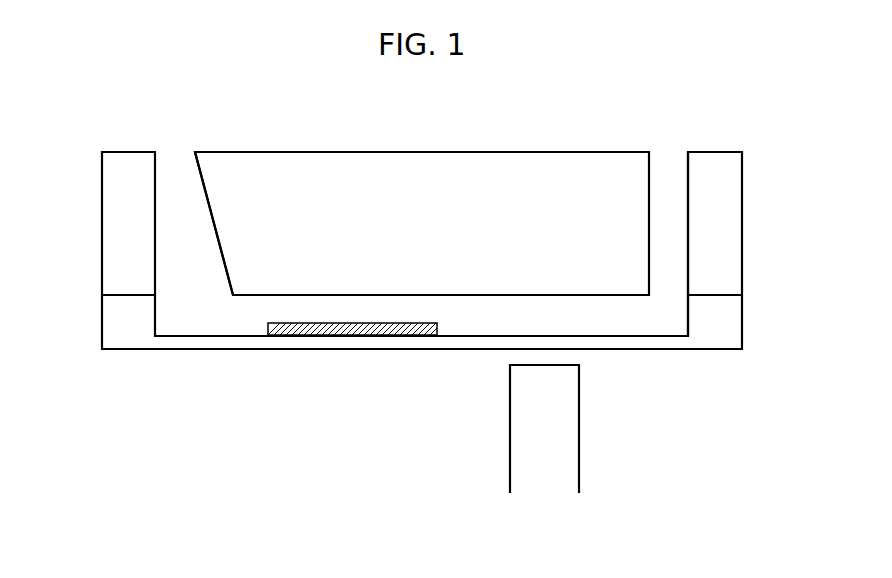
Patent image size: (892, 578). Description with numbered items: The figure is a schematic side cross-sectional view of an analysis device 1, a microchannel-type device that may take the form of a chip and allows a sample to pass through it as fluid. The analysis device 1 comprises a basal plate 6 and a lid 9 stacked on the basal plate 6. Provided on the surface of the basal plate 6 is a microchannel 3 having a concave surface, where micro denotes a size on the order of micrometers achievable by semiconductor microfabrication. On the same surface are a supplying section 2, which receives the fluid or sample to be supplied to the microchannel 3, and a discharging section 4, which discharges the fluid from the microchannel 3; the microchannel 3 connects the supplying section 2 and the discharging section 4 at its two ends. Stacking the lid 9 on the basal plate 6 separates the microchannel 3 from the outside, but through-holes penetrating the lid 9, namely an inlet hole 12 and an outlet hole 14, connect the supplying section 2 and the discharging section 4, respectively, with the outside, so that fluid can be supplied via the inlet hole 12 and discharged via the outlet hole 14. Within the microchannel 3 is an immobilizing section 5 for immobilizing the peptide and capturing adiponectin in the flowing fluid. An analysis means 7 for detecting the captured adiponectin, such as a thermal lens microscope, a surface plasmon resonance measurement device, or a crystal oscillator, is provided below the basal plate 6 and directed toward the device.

The analysis device 1 is at (733, 114).
The supplying section 2 is at (187, 318).
The microchannel 3 is at (477, 319).
The discharging section 4 is at (666, 318).
The immobilizing section 5 is at (349, 336).
The basal plate 6 is at (729, 325).
The analysis means 7 is at (567, 433).
The lid 9 is at (421, 168).
The inlet hole 12 is at (177, 169).
The outlet hole 14 is at (668, 169).